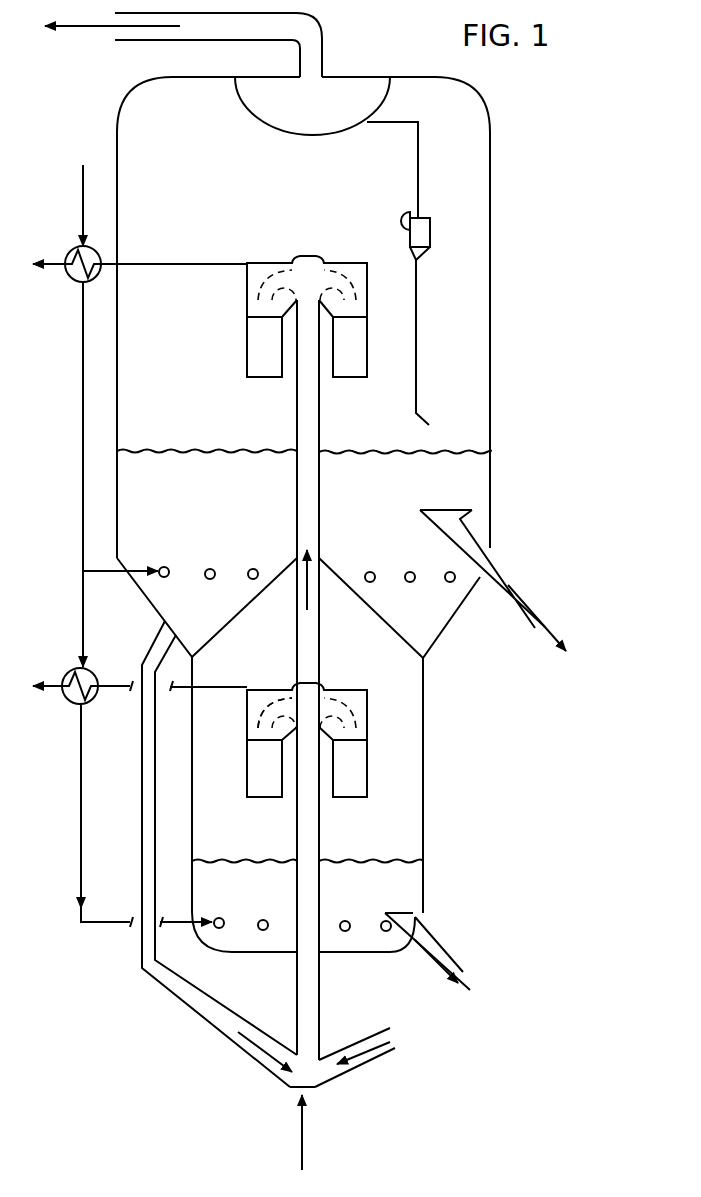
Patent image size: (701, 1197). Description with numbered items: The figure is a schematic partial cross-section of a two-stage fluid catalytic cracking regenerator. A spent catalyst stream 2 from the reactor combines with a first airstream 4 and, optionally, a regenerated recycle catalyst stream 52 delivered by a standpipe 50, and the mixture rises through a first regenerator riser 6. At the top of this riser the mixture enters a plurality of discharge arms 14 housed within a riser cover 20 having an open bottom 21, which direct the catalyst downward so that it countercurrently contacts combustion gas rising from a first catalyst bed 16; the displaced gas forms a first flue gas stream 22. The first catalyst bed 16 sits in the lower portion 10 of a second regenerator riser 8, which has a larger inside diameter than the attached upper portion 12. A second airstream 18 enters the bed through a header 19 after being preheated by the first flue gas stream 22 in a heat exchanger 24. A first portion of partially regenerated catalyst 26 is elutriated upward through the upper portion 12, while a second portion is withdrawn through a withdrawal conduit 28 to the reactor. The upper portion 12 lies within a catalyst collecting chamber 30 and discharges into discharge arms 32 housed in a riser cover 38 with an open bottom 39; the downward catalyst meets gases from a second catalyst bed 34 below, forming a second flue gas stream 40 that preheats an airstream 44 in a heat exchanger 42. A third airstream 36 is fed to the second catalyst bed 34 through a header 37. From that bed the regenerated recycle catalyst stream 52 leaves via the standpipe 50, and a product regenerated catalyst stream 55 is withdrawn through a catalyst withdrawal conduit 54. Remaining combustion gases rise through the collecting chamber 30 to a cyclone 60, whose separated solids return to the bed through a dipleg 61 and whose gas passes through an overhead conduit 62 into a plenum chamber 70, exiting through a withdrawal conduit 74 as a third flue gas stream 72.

The spent catalyst stream 2 is at (382, 1052).
The first airstream 4 is at (305, 1150).
The first regenerator riser 6 is at (319, 1012).
The second regenerator riser 8 is at (423, 765).
The lower portion 10 is at (423, 822).
The upper portion 12 is at (297, 433).
The discharge arms 14 is at (262, 722).
The first catalyst bed 16 is at (257, 889).
The second airstream 18 is at (80, 802).
The header 19 is at (222, 918).
The riser cover 20 is at (272, 690).
The open bottom 21 is at (268, 797).
The first flue gas stream 22 is at (128, 690).
The heat exchanger 24 is at (64, 676).
The first portion of partially regenerated catalyst 26 is at (305, 590).
The withdrawal conduit 28 is at (450, 955).
The catalyst collecting chamber 30 is at (490, 262).
The discharge arms 32 is at (270, 285).
The second catalyst bed 34 is at (214, 504).
The third airstream 36 is at (106, 572).
The header 37 is at (168, 567).
The riser cover 38 is at (262, 353).
The open bottom 39 is at (257, 378).
The second flue gas stream 40 is at (163, 264).
The heat exchanger 42 is at (70, 253).
The airstream 44 is at (83, 203).
The standpipe 50 is at (193, 1013).
The regenerated recycle catalyst stream 52 is at (268, 1057).
The catalyst withdrawal conduit 54 is at (522, 586).
The product regenerated catalyst stream 55 is at (550, 627).
The cyclone 60 is at (401, 222).
The dipleg 61 is at (416, 340).
The overhead conduit 62 is at (418, 182).
The plenum chamber 70 is at (243, 110).
The third flue gas stream 72 is at (85, 36).
The withdrawal conduit 74 is at (310, 12).